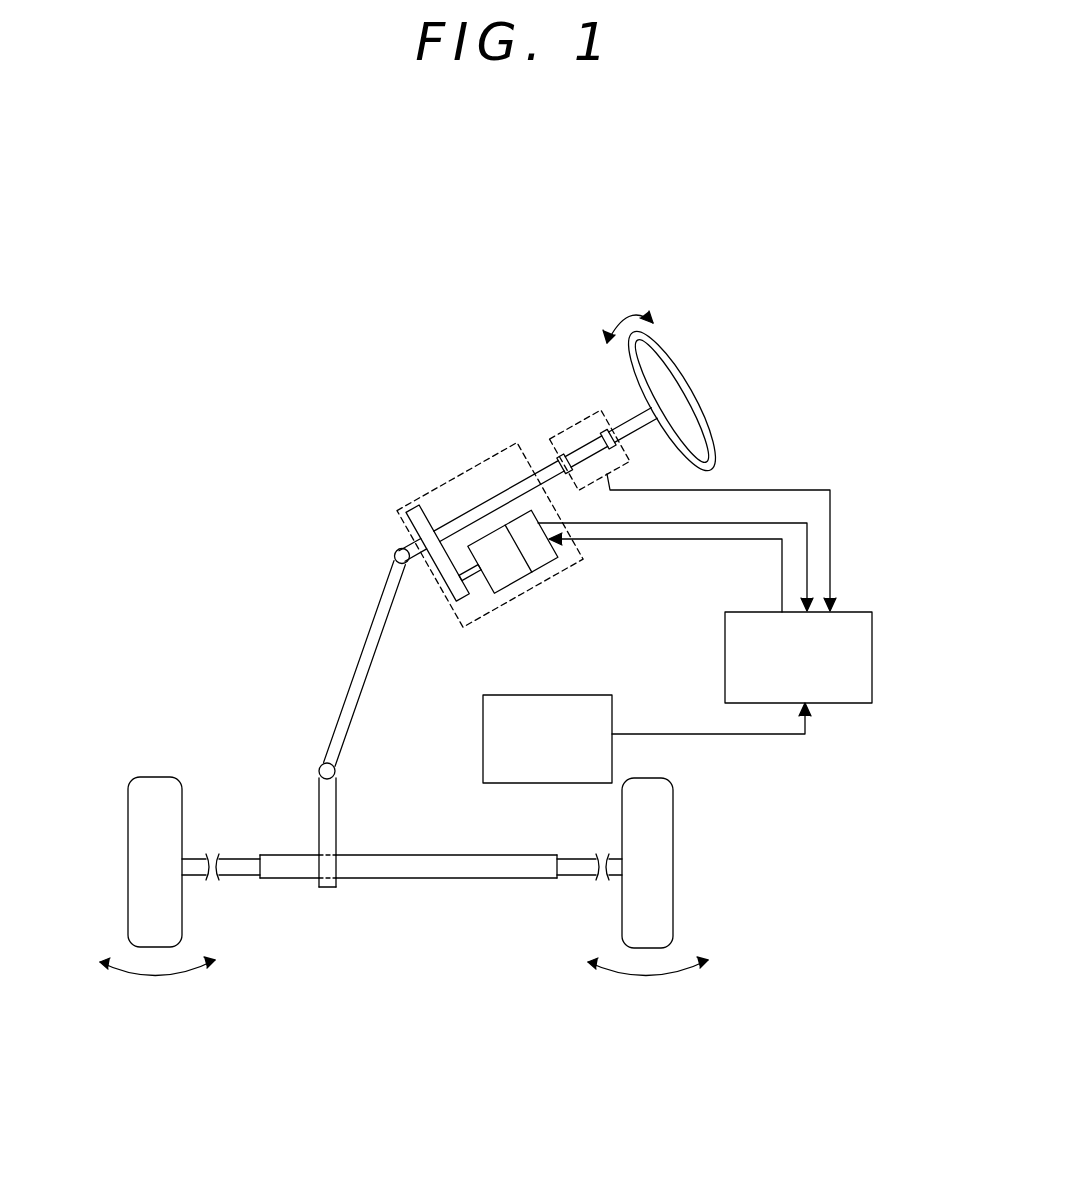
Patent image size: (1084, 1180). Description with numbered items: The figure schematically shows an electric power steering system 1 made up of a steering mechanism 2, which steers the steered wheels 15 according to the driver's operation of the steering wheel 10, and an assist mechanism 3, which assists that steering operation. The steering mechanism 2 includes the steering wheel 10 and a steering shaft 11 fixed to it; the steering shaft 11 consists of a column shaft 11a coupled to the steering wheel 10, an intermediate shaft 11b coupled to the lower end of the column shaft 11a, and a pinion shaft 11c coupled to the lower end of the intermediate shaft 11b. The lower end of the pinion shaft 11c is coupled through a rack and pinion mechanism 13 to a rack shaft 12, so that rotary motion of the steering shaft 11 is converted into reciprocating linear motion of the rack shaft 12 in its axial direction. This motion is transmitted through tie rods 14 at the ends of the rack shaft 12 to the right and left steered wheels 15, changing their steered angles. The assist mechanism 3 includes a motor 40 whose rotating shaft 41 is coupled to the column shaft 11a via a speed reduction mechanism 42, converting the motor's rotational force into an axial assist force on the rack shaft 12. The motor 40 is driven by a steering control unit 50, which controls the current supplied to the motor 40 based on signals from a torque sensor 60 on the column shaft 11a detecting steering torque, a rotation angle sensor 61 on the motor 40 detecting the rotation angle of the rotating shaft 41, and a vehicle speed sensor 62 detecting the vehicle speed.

The electric power steering system 1 is at (193, 405).
The steering mechanism 2 is at (230, 562).
The assist mechanism 3 is at (447, 476).
The steering wheel 10 is at (697, 398).
The steering shaft 11 is at (305, 535).
The column shaft 11a is at (395, 552).
The intermediate shaft 11b is at (362, 652).
The pinion shaft 11c is at (318, 768).
The rack shaft 12 is at (493, 878).
The rack and pinion mechanism 13 is at (312, 848).
The tie rods 14 is at (244, 877).
The steered wheels 15 is at (128, 862).
The motor 40 is at (511, 585).
The rotating shaft 41 is at (474, 585).
The speed reduction mechanism 42 is at (450, 590).
The steering control unit 50 is at (873, 648).
The torque sensor 60 is at (583, 407).
The rotation angle sensor 61 is at (546, 569).
The vehicle speed sensor 62 is at (567, 694).